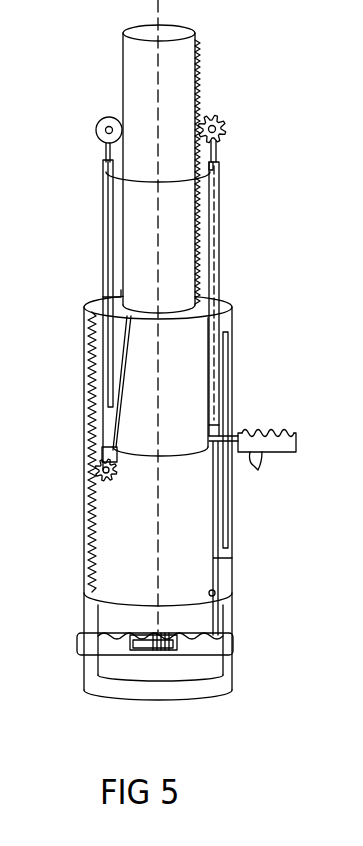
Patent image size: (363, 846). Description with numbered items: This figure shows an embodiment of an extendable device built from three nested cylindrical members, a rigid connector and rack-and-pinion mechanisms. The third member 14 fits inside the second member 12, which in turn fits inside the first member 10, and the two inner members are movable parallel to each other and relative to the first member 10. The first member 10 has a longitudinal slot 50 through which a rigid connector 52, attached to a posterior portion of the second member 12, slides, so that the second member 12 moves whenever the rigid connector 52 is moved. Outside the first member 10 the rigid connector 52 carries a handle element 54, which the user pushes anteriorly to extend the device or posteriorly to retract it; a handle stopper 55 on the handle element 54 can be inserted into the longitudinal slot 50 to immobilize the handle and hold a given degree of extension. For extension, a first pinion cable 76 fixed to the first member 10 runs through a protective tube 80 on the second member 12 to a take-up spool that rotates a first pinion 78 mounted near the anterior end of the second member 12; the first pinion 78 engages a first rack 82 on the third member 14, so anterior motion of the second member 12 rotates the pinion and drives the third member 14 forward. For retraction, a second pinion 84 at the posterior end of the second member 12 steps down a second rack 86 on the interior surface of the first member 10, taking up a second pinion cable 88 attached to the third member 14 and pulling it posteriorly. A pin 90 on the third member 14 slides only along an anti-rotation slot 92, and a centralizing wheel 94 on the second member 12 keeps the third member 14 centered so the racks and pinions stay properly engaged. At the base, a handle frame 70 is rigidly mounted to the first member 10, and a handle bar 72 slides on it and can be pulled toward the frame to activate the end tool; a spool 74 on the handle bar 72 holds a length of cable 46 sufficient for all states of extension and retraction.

The first member 10 is at (92, 330).
The second member 12 is at (110, 182).
The third member 14 is at (128, 60).
The cable 46 is at (162, 620).
The longitudinal slot 50 is at (230, 352).
The rigid connector 52 is at (224, 435).
The handle element 54 is at (282, 432).
The handle stopper 55 is at (258, 462).
The handle frame 70 is at (180, 698).
The handle bar 72 is at (193, 650).
The spool 74 is at (141, 648).
The first pinion cable 76 is at (216, 278).
The first pinion 78 is at (222, 122).
The tube 80 is at (222, 245).
The first rack 82 is at (222, 207).
The second pinion 84 is at (104, 483).
The second rack 86 is at (88, 422).
The second pinion cable 88 is at (127, 376).
The pin 90 is at (105, 275).
The anti-rotation slot 92 is at (104, 242).
The centralizing wheel 94 is at (98, 122).